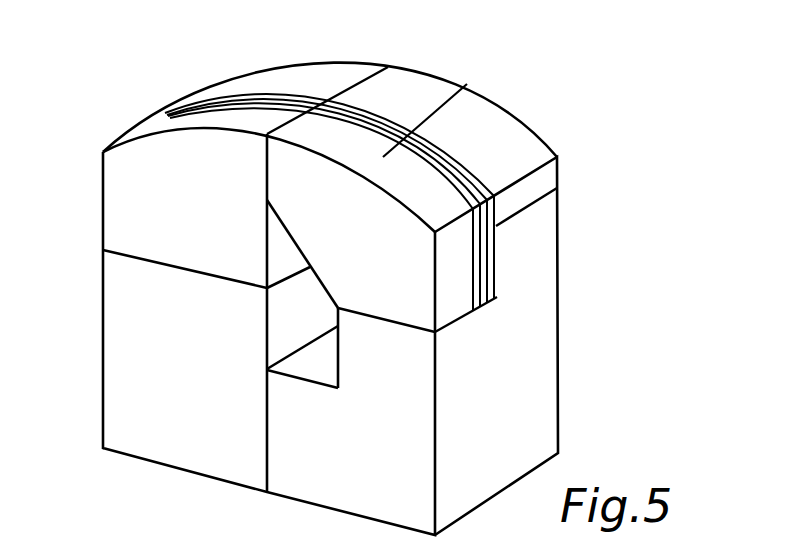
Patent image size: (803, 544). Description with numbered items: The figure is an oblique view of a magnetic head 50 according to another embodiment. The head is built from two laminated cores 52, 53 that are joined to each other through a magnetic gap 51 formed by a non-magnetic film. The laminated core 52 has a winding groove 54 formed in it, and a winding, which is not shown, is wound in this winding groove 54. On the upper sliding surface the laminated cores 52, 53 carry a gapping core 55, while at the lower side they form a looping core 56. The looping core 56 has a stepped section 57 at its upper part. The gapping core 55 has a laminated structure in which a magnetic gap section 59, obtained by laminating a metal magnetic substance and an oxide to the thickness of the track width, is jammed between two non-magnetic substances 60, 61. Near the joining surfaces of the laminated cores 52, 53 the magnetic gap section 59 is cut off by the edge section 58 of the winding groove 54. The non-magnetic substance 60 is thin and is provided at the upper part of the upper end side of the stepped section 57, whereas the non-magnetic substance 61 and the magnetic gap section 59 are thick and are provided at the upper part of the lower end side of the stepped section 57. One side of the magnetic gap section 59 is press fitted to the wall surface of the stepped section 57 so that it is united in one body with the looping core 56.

The magnetic head 50 is at (398, 52).
The magnetic gap 51 is at (363, 82).
The laminated core 52 is at (532, 122).
The laminated core 53 is at (252, 76).
The winding groove 54 is at (315, 378).
The gapping core 55 is at (103, 188).
The looping core 56 is at (103, 336).
The stepped section 57 is at (497, 277).
The edge section 58 is at (288, 235).
The magnetic gap section 59 is at (223, 98).
The non-magnetic substance 60 is at (483, 123).
The non-magnetic substance 61 is at (439, 106).